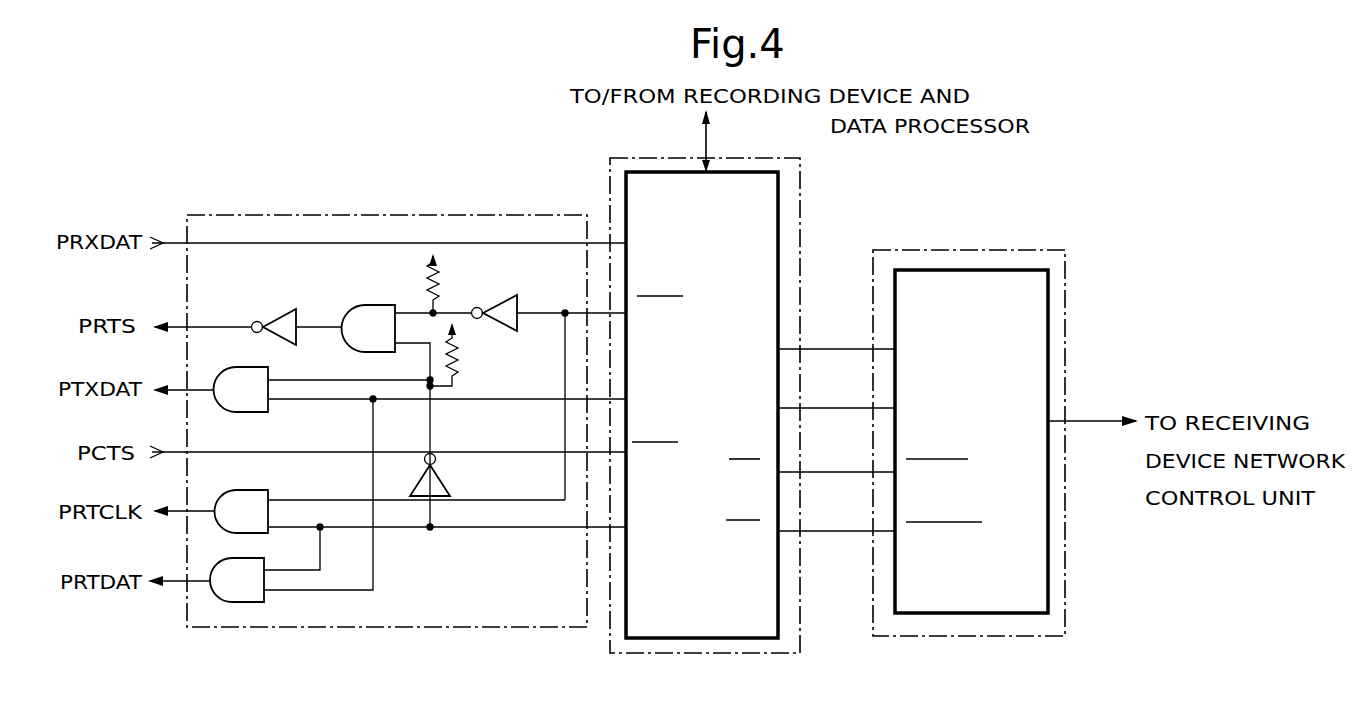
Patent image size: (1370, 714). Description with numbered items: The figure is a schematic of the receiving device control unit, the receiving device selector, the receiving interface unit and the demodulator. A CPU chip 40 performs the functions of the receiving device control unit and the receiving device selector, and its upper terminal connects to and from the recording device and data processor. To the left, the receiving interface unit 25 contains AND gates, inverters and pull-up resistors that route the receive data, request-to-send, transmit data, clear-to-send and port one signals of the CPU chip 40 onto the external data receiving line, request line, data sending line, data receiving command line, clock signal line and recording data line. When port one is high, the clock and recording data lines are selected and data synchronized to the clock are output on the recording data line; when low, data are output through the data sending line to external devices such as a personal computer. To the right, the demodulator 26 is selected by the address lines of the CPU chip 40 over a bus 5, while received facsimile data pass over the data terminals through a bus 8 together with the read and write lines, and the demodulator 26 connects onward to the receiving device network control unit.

The receiving interface unit 25 is at (383, 215).
The CPU chip 40 is at (800, 246).
The demodulator 26 is at (948, 250).
The 8-bit data bus 8 is at (836, 357).
The 5-bit address bus 5 is at (830, 417).